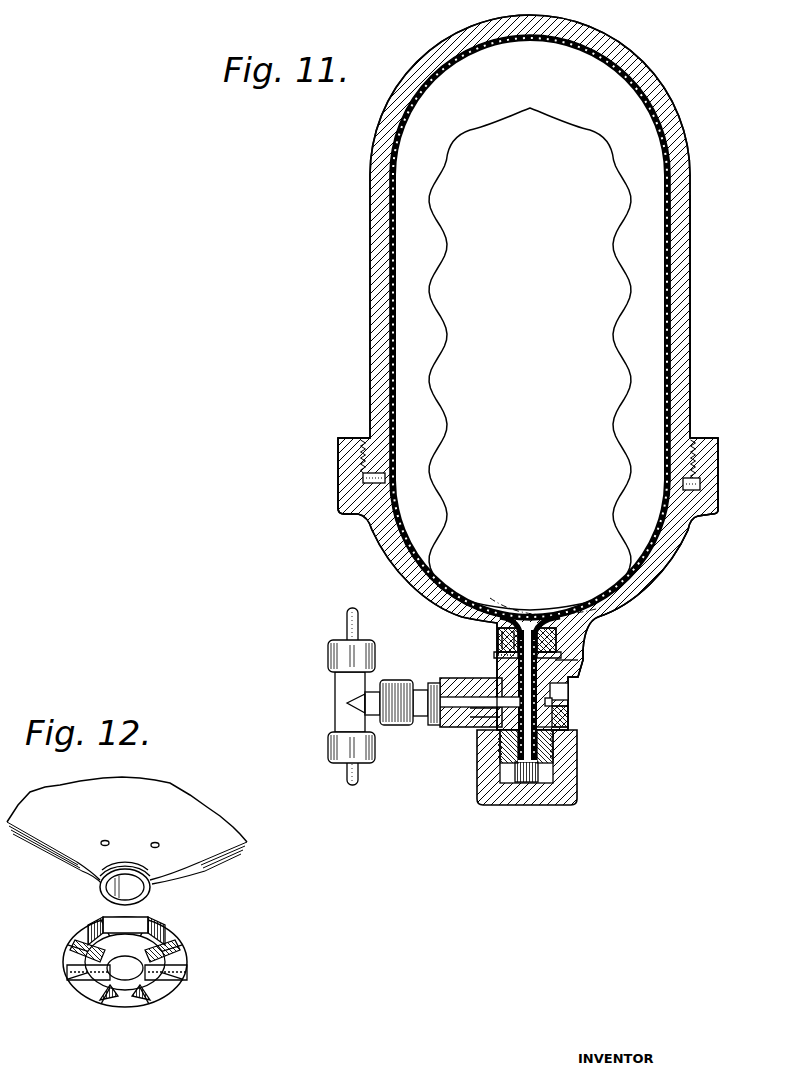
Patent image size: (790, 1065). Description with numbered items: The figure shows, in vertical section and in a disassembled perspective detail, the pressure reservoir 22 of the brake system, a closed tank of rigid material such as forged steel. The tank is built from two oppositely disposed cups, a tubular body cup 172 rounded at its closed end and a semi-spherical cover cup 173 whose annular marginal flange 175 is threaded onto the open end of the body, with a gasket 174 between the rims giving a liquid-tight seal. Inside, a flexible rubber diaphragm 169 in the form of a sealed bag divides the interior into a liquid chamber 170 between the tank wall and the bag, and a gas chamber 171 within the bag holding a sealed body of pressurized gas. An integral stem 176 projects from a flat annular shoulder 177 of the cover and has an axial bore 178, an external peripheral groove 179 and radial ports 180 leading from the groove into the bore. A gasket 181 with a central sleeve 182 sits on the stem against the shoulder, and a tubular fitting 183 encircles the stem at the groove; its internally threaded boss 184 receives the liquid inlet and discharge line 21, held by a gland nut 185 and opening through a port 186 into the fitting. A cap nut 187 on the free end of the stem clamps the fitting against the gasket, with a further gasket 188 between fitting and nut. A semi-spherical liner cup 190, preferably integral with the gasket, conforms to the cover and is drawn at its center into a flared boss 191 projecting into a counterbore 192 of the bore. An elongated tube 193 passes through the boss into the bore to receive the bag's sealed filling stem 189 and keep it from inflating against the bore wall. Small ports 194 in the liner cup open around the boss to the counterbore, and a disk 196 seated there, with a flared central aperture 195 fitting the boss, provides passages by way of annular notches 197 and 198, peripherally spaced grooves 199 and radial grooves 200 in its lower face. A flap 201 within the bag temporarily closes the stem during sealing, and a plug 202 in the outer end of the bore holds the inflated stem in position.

In FIG. 11, the liquid inlet and discharge line 21 is at (347, 773).
In FIG. 11, the reservoir 22 is at (362, 176).
In FIG. 11, the diaphragm 169 is at (672, 196).
In FIG. 11, the liquid chamber 170 is at (624, 99).
In FIG. 11, the gas chamber 171 is at (582, 170).
In FIG. 11, the cup 172 is at (684, 302).
In FIG. 11, the cup 173 is at (684, 541).
In FIG. 11, the gasket 174 is at (703, 487).
In FIG. 11, the annular marginal flange 175 is at (712, 452).
In FIG. 11, the stem 176 is at (572, 723).
In FIG. 11, the annular shoulder 177 is at (577, 674).
In FIG. 11, the axial bore 178 is at (573, 691).
In FIG. 11, the peripheral groove 179 is at (573, 699).
In FIG. 11, the radial ports 180 is at (570, 711).
In FIG. 11, the gasket 181 is at (487, 679).
In FIG. 11, the sleeve 182 is at (473, 727).
In FIG. 11, the line connecter or fitting 183 is at (493, 732).
In FIG. 11, the internally threaded boss 184 is at (460, 722).
In FIG. 11, the gland nut 185 is at (433, 725).
In FIG. 11, the port 186 is at (448, 722).
In FIG. 11, the cap nut 187 is at (576, 789).
In FIG. 11, the gasket 188 is at (575, 733).
In FIG. 11, the filling stem 189 is at (540, 746).
In FIG. 11, the cup 190 is at (665, 573).
In FIG. 12, the cup 190 is at (183, 795).
In FIG. 11, the flared boss 191 is at (587, 663).
In FIG. 12, the flared boss 191 is at (152, 878).
In FIG. 11, the counterbore 192 is at (565, 643).
In FIG. 11, the tube 193 is at (545, 738).
In FIG. 11, the ports 194 is at (504, 628).
In FIG. 12, the ports 194 is at (75, 860).
In FIG. 11, the flared aperture 195 is at (500, 645).
In FIG. 12, the flared aperture 195 is at (160, 1003).
In FIG. 11, the disk 196 is at (578, 658).
In FIG. 12, the disk 196 is at (167, 933).
In FIG. 11, the annular notch 197 is at (497, 632).
In FIG. 12, the annular notch 197 is at (100, 910).
In FIG. 11, the annular notch 198 is at (502, 652).
In FIG. 12, the annular notch 198 is at (173, 948).
In FIG. 12, the peripherally spaced grooves 199 is at (67, 968).
In FIG. 11, the radial grooves 200 is at (500, 656).
In FIG. 12, the radial grooves 200 is at (140, 992).
In FIG. 11, the flap 201 is at (490, 618).
In FIG. 11, the plug 202 is at (523, 778).